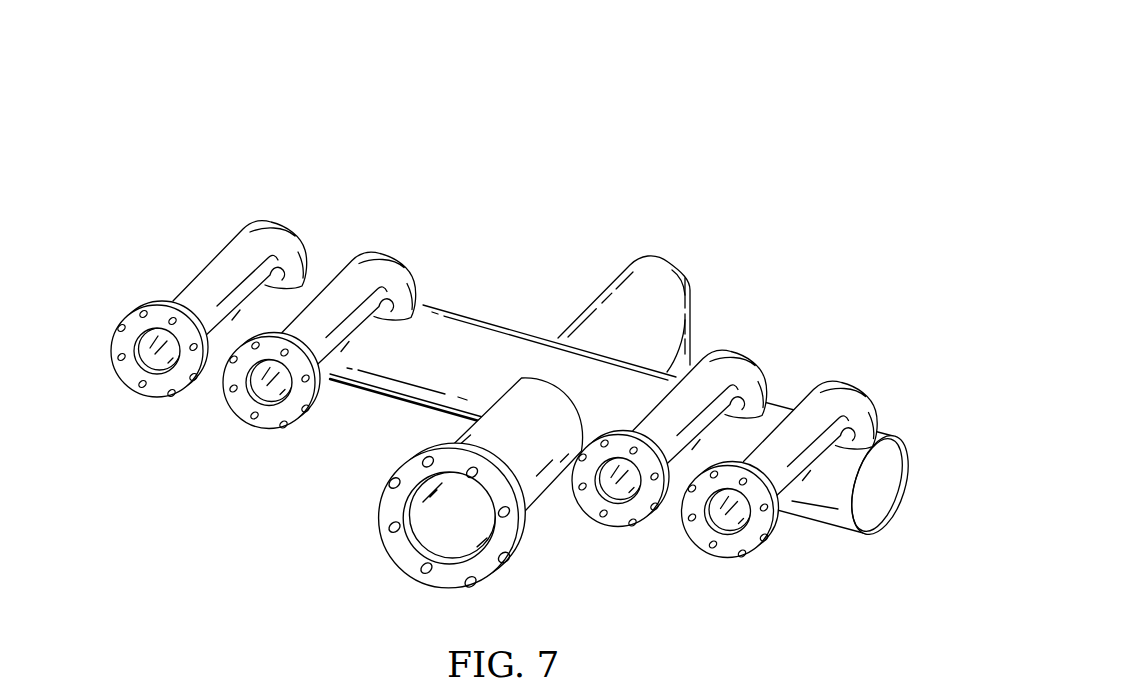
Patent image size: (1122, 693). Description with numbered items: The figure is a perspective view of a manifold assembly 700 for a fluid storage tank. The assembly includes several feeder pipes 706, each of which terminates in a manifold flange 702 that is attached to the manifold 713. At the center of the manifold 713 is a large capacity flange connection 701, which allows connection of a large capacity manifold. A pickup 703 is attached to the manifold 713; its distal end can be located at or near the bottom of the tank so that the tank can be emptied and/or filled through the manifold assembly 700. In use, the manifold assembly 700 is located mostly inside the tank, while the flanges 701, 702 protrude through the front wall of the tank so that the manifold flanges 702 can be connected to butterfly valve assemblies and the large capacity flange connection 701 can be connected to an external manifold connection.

The manifold assembly 700 is at (686, 101).
The large capacity flange connection 701 is at (465, 483).
The manifold flange 702 is at (423, 432).
The pickup 703 is at (670, 288).
The feeder pipe 706 is at (531, 333).
The manifold 713 is at (468, 314).